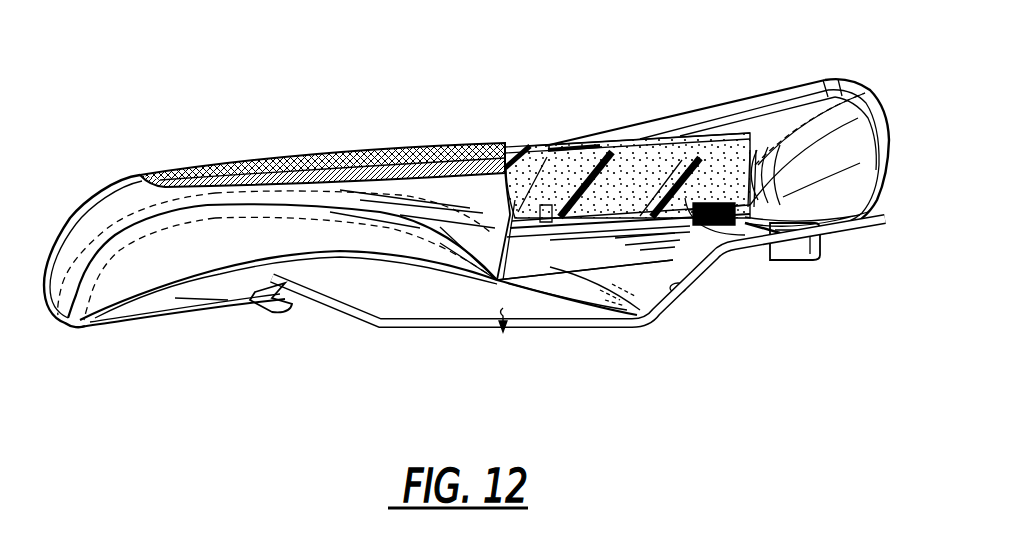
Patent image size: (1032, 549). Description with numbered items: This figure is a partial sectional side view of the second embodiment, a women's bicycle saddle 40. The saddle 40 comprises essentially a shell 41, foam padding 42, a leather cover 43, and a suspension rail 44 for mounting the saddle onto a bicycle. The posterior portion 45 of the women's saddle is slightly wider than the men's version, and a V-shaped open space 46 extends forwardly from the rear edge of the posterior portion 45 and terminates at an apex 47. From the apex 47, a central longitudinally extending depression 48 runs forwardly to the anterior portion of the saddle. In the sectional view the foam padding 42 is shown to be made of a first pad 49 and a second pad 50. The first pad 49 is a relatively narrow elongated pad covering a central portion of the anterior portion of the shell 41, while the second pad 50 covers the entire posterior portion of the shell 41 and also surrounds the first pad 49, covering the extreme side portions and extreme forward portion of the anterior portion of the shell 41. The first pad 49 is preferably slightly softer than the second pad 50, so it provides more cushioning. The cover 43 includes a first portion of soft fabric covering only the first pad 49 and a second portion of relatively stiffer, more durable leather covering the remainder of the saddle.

The women's bicycle saddle 40 is at (255, 96).
The shell 41 is at (626, 219).
The foam padding 42 is at (630, 140).
The leather cover 43 is at (514, 150).
The suspension rail 44 is at (420, 330).
The posterior portion 45 is at (807, 82).
The V-shaped open space 46 is at (850, 143).
The apex 47 is at (728, 188).
The central longitudinally extending depression 48 is at (707, 150).
The first pad 49 is at (360, 150).
The second pad 50 is at (546, 203).